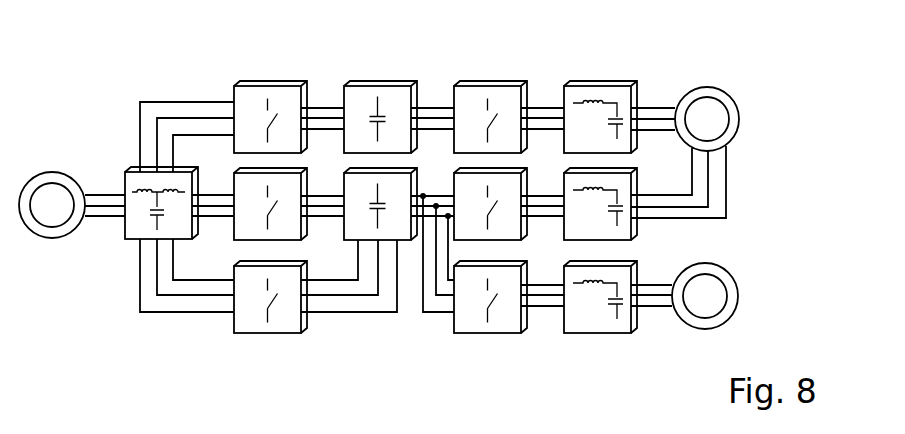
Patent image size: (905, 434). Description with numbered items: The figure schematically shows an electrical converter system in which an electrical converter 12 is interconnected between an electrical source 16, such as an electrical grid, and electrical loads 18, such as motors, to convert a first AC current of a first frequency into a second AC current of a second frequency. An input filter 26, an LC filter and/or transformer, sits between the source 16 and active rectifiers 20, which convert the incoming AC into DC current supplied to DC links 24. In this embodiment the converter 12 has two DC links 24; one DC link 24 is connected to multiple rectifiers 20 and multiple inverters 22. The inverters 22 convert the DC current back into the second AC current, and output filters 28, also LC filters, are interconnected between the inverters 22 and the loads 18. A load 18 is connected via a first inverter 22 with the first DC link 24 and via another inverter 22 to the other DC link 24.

The electrical converter 12 is at (662, 75).
The electrical source 16 is at (55, 240).
The electrical load 18 is at (721, 84).
The active rectifier 20 is at (273, 82).
The inverter 22 is at (499, 82).
The DC link 24 is at (357, 172).
The input filter 26 is at (133, 238).
The output filter 28 is at (613, 82).